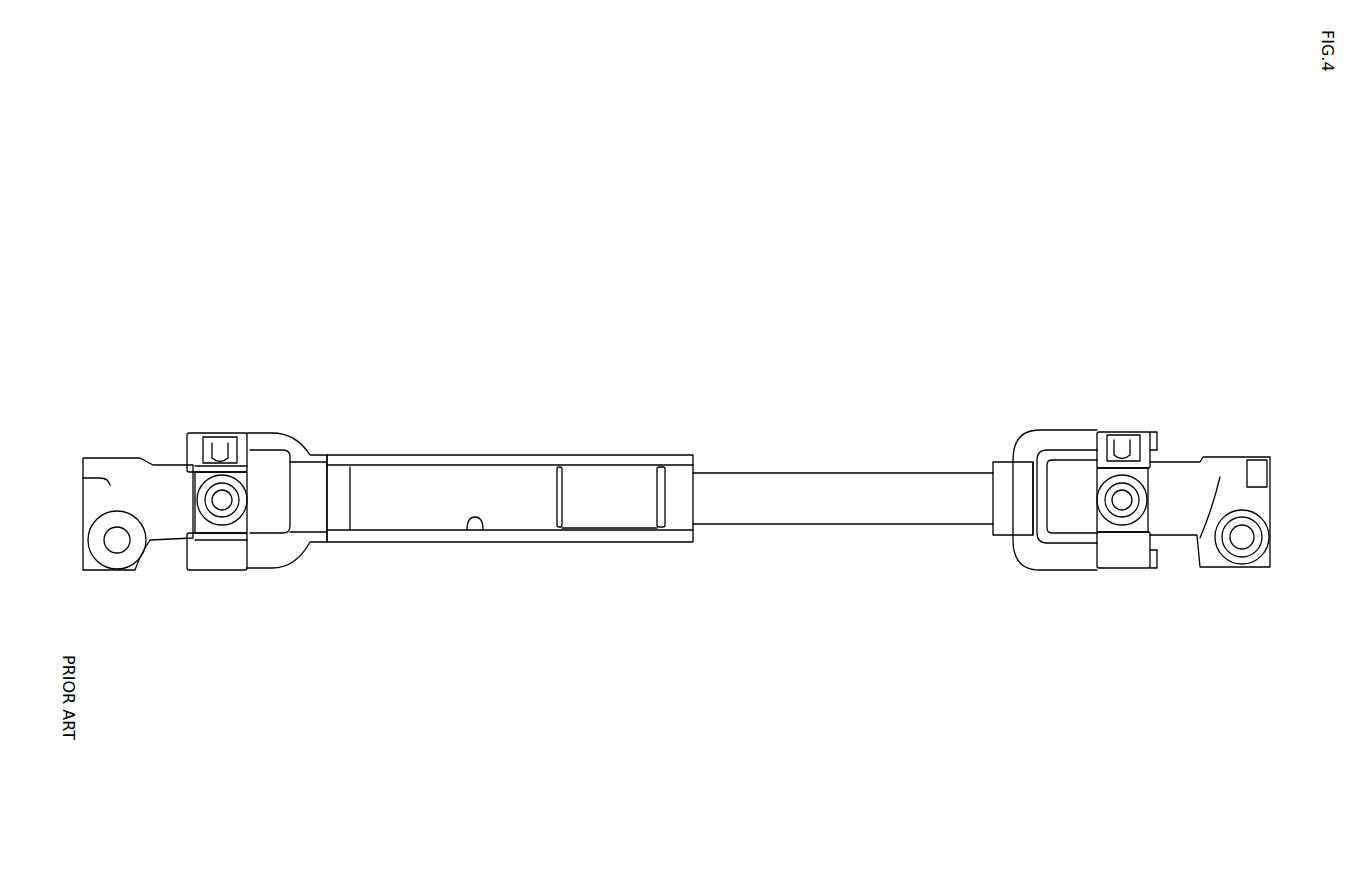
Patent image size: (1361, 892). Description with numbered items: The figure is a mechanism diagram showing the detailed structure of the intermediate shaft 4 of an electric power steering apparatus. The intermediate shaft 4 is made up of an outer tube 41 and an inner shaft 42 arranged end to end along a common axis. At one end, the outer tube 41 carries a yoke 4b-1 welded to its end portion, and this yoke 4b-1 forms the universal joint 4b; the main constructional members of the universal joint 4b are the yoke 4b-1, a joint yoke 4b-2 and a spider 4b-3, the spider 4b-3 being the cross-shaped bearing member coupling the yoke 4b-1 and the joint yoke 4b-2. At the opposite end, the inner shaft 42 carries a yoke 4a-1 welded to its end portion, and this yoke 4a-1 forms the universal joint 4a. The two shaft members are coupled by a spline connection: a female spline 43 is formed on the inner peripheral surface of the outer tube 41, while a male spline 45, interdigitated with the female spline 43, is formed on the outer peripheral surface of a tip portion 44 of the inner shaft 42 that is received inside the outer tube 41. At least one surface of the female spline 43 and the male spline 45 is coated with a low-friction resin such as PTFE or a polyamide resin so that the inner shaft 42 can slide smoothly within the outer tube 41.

The intermediate shaft 4 is at (663, 290).
The universal joint 4a is at (1170, 405).
The yoke 4a-1 is at (1050, 430).
The universal joint 4b is at (174, 372).
The yoke 4b-1 is at (273, 433).
The joint yoke 4b-2 is at (118, 498).
The spider 4b-3 is at (233, 438).
The outer tube 41 is at (508, 445).
The inner shaft 42 is at (856, 462).
The female spline 43 is at (483, 527).
The tip portion 44 is at (637, 490).
The male spline 45 is at (603, 532).